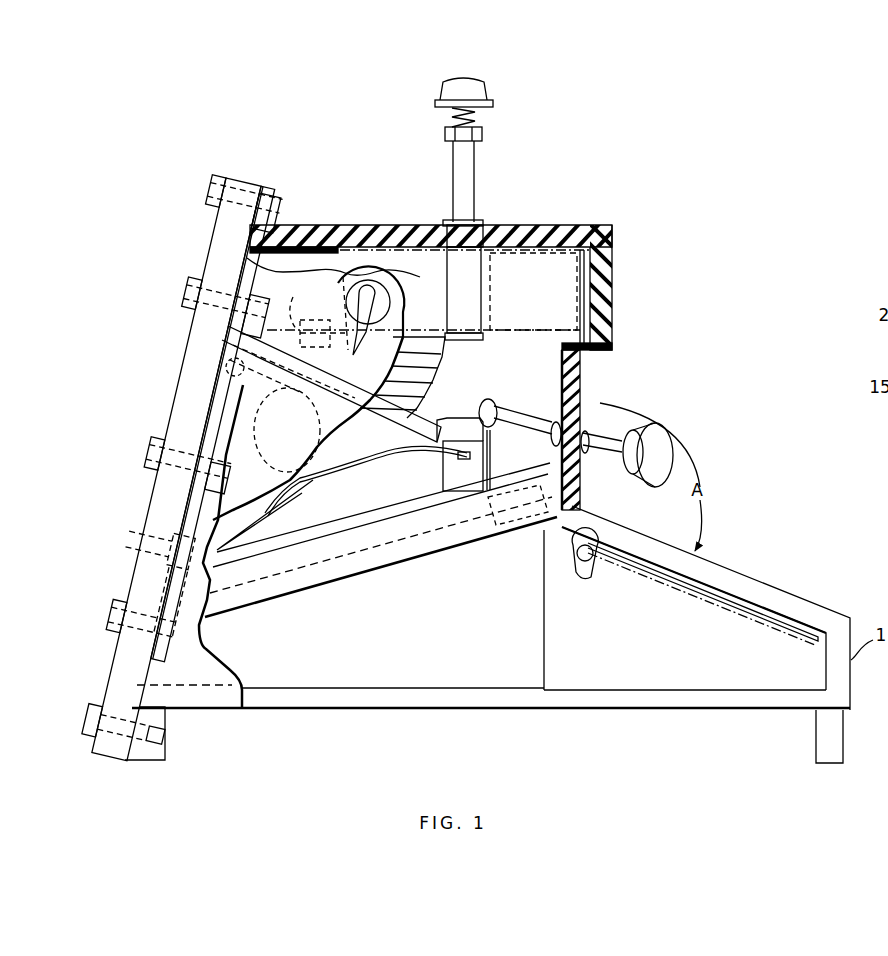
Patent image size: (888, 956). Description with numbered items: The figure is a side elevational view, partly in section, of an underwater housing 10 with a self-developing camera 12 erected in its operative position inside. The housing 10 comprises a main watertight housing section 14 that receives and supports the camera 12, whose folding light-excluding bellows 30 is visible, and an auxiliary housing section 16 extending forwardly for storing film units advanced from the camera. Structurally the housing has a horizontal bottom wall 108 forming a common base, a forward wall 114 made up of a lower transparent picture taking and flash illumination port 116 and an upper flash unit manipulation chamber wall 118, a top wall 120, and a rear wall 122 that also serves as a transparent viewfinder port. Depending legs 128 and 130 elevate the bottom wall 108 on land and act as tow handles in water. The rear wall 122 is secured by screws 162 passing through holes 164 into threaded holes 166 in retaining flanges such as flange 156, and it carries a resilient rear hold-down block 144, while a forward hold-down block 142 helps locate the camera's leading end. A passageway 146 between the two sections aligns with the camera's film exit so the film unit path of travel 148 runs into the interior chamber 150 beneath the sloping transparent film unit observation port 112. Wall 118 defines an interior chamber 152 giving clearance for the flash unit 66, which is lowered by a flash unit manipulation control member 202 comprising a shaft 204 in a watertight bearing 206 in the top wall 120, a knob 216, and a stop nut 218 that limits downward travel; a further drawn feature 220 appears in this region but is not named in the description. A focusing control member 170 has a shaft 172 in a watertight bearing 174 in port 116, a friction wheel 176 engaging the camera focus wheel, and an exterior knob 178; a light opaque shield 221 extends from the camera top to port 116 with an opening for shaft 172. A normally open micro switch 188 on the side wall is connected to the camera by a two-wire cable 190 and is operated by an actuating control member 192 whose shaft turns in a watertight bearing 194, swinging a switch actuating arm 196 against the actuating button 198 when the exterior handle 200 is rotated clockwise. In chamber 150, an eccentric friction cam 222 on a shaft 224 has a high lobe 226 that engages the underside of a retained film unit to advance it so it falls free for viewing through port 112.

The underwater housing 10 is at (478, 321).
The self-developing camera 12 is at (381, 471).
The main watertight housing section 14 is at (478, 321).
The auxiliary housing section 16 is at (656, 714).
The bellows 30 is at (378, 482).
The flash unit 66 is at (494, 226).
The bottom wall 108 is at (497, 710).
The film unit observation port 112 is at (706, 607).
The forward wall 114 is at (629, 357).
The picture taking and flash illumination port 116 is at (598, 401).
The flash unit manipulation chamber wall 118 is at (617, 290).
The top wall 120 is at (400, 224).
The rear wall 122 is at (183, 383).
The leg 128 is at (845, 740).
The leg 130 is at (160, 722).
The forward hold-down block 142 is at (519, 467).
The rear hold-down block 144 is at (172, 535).
The passageway 146 is at (557, 544).
The film unit path of travel 148 is at (748, 631).
The interior chamber 150 is at (738, 692).
The interior chamber 152 is at (566, 279).
The flange 156 is at (213, 415).
The screw 162 is at (212, 188).
The hole 164 is at (243, 188).
The threaded hole 166 is at (270, 192).
The focusing control member 170 is at (612, 422).
The shaft 172 is at (509, 412).
The watertight bearing 174 is at (593, 453).
The friction wheel 176 is at (495, 401).
The knob 178 is at (661, 433).
The micro switch 188 is at (273, 308).
The 2 wire cable 190 is at (295, 490).
The actuating control member 192 is at (395, 295).
The watertight bearing 194 is at (368, 282).
The switch actuating arm 196 is at (333, 302).
The actuating button 198 is at (330, 345).
The handle 200 is at (340, 428).
The flash unit manipulation control member 202 is at (479, 188).
The shaft 204 is at (470, 160).
The watertight bearing 206 is at (449, 222).
The knob 216 is at (452, 80).
The nut 218 is at (447, 130).
The hidden chamber 220 is at (493, 290).
The shield 221 is at (561, 422).
The friction cam 222 is at (601, 564).
The shaft 224 is at (588, 580).
The high lobe 226 is at (576, 530).